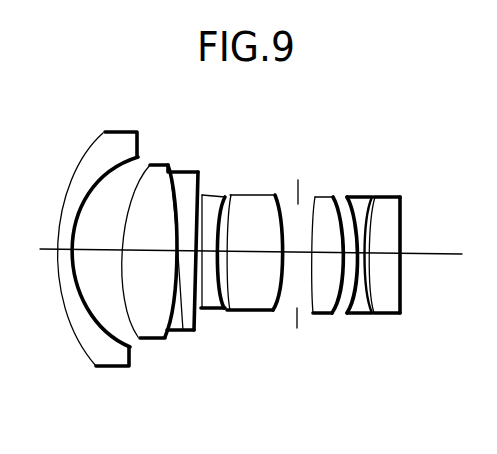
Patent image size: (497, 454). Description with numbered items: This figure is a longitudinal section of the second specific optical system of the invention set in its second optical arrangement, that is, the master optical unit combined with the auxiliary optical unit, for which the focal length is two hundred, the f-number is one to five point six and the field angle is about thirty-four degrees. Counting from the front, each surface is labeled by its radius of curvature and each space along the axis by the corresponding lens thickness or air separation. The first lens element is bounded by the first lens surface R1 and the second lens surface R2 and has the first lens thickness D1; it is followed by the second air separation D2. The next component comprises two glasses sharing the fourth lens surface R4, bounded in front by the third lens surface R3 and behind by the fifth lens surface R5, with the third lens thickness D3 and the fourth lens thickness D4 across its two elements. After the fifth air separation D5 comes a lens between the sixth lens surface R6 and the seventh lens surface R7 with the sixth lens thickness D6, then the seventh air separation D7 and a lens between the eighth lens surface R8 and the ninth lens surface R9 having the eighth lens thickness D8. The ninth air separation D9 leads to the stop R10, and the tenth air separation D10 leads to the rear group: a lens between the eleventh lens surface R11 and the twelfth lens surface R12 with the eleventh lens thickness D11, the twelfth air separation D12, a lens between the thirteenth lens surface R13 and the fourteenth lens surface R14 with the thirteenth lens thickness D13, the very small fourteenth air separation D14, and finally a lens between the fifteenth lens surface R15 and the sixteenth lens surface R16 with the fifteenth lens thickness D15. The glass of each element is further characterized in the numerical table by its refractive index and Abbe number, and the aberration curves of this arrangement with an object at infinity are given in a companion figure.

The first lens surface R1 is at (92, 354).
The second lens surface R2 is at (128, 348).
The third lens surface R3 is at (139, 338).
The fourth lens surface R4 is at (165, 338).
The fifth lens surface R5 is at (187, 330).
The sixth lens surface R6 is at (204, 308).
The seventh lens surface R7 is at (217, 308).
The eighth lens surface R8 is at (232, 310).
The ninth lens surface R9 is at (272, 310).
The stop R10 is at (297, 328).
The eleventh lens surface R11 is at (313, 313).
The twelfth lens surface R12 is at (327, 313).
The thirteenth lens surface R13 is at (347, 313).
The fourteenth lens surface R14 is at (366, 313).
The fifteenth lens surface R15 is at (385, 313).
The sixteenth lens surface R16 is at (402, 313).
The first lens thickness D1 is at (62, 249).
The second air separation D2 is at (108, 249).
The third lens thickness D3 is at (147, 250).
The fourth lens thickness D4 is at (181, 250).
The fifth air separation D5 is at (205, 250).
The sixth lens thickness D6 is at (209, 250).
The seventh air separation D7 is at (216, 250).
The eighth lens thickness D8 is at (251, 250).
The ninth air separation D9 is at (289, 252).
The tenth air separation D10 is at (305, 252).
The eleventh lens thickness D11 is at (325, 253).
The twelfth air separation D12 is at (346, 253).
The thirteenth lens thickness D13 is at (359, 253).
The fourteenth air separation D14 is at (369, 253).
The fifteenth lens thickness D15 is at (385, 253).